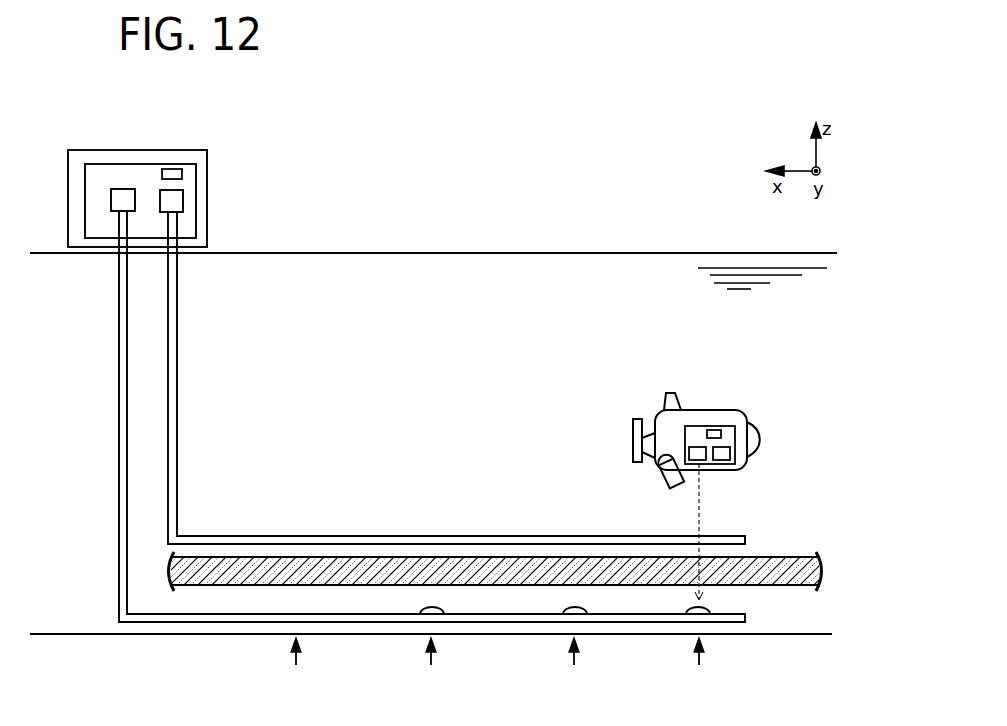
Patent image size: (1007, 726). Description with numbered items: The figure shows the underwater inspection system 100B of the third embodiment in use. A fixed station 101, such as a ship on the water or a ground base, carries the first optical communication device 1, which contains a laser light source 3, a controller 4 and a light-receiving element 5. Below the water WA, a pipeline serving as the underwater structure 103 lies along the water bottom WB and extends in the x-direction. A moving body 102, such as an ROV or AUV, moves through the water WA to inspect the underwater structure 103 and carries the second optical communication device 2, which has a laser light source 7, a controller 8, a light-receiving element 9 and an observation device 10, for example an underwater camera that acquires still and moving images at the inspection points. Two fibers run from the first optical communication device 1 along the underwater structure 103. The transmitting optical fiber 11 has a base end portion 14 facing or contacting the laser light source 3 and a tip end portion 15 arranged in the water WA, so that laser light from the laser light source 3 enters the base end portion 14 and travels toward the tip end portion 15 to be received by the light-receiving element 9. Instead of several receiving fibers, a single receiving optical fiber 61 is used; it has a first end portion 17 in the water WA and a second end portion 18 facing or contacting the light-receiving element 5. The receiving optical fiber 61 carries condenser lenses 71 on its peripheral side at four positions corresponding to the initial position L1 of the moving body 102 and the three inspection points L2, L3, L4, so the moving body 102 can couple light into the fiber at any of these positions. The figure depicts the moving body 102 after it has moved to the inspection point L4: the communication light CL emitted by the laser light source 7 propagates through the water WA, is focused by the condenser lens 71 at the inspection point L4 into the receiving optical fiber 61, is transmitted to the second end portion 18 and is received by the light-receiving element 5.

The fixed station 101 is at (205, 132).
The first optical communication device 1 is at (197, 191).
The controller 4 is at (183, 174).
The light-receiving element 5 is at (123, 189).
The laser light source 3 is at (183, 203).
The base end portion 14 is at (173, 218).
The second end portion 18 is at (119, 216).
The receiving optical fiber 61 is at (118, 450).
The transmitting optical fiber 11 is at (177, 345).
The tip end portion 15 is at (745, 540).
The first end portion 17 is at (745, 620).
The underwater structure 103 is at (805, 586).
The condenser lens 71 is at (421, 611).
The moving body 102 is at (640, 410).
The second optical communication device 2 is at (691, 426).
The controller 8 is at (713, 430).
The laser light source 7 is at (700, 447).
The light-receiving element 9 is at (722, 447).
The observation device 10 is at (664, 472).
The underwater inspection system 100B is at (543, 307).
The water WA is at (670, 272).
The water bottom WB is at (65, 632).
The communication light CL is at (700, 498).
The initial position L1 is at (296, 664).
The inspection point L2 is at (431, 664).
The inspection point L3 is at (575, 664).
The inspection point L4 is at (697, 664).